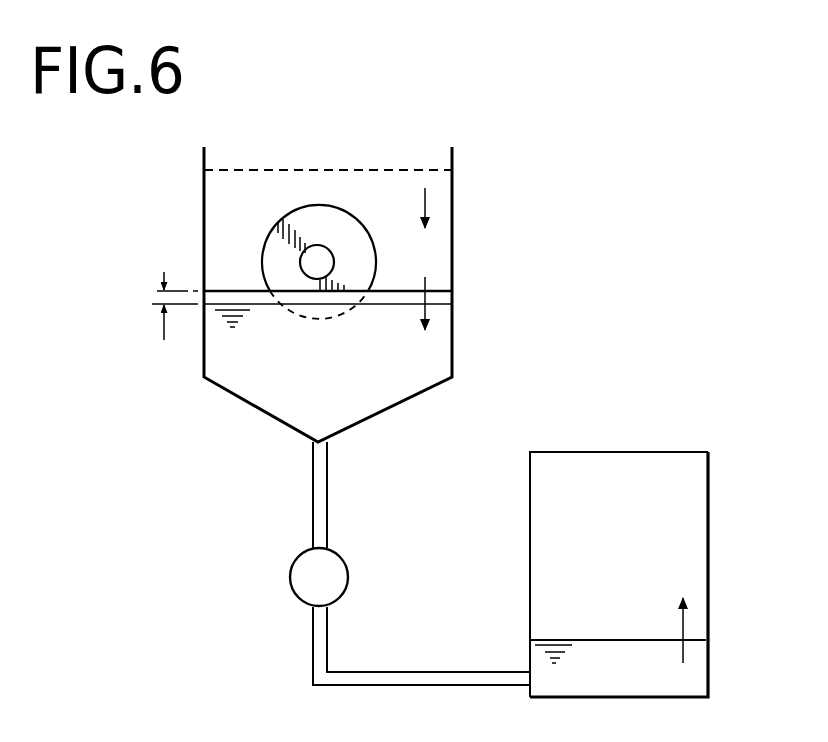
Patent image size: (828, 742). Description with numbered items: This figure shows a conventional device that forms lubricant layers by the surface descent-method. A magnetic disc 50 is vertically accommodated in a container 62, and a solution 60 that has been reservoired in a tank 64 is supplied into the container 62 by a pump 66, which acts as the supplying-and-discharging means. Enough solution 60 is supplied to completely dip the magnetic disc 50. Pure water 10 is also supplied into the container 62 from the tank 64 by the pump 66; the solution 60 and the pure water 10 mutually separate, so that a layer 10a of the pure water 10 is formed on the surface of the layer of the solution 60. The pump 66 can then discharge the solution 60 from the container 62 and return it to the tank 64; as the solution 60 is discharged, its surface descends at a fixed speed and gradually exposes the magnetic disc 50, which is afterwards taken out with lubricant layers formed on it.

The pure water 10 is at (232, 292).
The layer of the pure water 10a is at (170, 326).
The magnetic disc 50 is at (344, 217).
The solution 60 is at (435, 358).
The container 62 is at (452, 215).
The tank 64 is at (708, 520).
The pump 66 is at (348, 575).